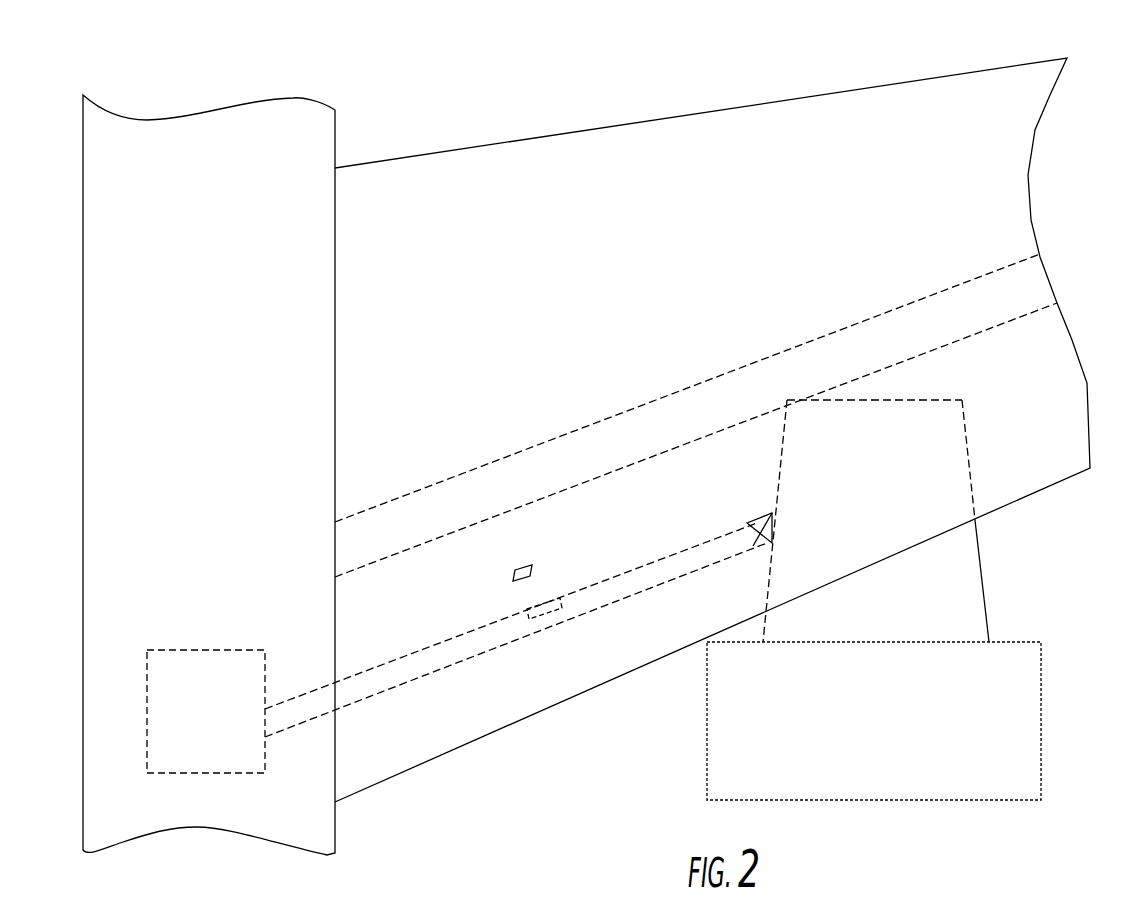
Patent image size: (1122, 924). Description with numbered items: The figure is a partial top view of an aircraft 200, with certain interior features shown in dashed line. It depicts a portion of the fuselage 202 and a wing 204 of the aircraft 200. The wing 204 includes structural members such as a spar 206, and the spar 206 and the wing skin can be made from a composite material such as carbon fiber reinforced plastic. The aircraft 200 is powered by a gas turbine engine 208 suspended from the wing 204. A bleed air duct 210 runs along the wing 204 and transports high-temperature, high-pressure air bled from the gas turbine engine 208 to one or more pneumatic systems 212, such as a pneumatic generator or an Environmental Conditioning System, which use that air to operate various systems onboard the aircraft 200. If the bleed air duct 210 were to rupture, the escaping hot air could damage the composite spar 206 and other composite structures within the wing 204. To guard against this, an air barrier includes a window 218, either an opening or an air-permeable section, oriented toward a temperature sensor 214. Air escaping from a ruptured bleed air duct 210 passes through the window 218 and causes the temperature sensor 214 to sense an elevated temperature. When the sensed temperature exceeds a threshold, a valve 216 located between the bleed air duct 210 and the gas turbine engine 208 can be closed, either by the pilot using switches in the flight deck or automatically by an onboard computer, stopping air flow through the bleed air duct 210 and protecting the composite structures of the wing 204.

The aircraft 200 is at (582, 83).
The fuselage 202 is at (335, 345).
The wing 204 is at (433, 152).
The spar 206 is at (550, 440).
The gas turbine engine 208 is at (993, 610).
The bleed air duct 210 is at (575, 617).
The pneumatic systems 212 is at (268, 752).
The temperature sensor 214 is at (533, 570).
The valve 216 is at (738, 532).
The window 218 is at (545, 622).